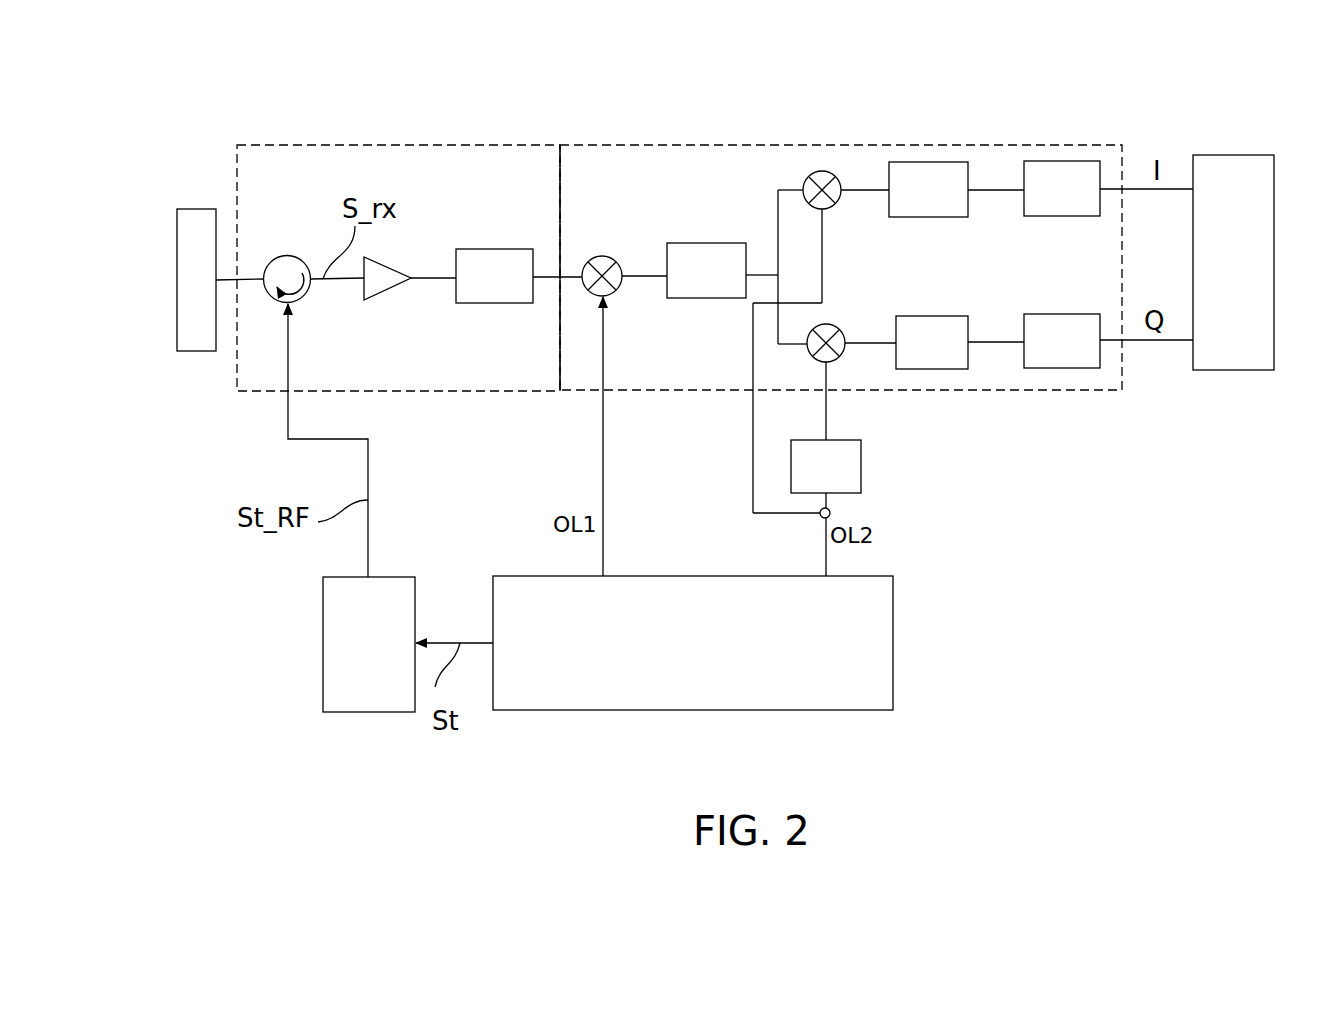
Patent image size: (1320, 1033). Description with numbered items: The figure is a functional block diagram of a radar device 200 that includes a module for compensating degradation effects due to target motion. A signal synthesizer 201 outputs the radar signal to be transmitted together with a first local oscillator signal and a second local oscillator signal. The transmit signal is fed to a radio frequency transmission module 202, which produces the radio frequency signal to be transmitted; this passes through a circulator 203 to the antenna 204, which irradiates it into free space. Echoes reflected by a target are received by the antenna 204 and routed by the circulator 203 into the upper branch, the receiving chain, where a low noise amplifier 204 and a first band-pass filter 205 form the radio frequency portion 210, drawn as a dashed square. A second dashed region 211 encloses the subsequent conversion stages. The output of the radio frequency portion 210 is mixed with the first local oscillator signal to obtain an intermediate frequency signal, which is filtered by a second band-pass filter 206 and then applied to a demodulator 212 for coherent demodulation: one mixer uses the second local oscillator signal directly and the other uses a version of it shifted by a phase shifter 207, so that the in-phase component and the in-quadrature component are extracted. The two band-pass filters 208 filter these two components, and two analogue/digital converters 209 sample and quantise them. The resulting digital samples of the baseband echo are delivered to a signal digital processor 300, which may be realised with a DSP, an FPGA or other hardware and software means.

The radar device 200 is at (1050, 50).
The signal synthesizer 201 is at (893, 640).
The radio frequency transmission module 202 is at (323, 652).
The circulator 203 is at (290, 256).
The antenna / amplifier 204 is at (203, 351).
The first band-pass filter 205 is at (470, 249).
The second band-pass filter 206 is at (688, 243).
The phase shifter 207 is at (861, 458).
The band-pass filters 208 is at (915, 162).
The analogue/digital converters 209 is at (1045, 161).
The radio frequency portion 210 is at (394, 145).
The demodulation section 211 is at (614, 145).
The demodulator 212 is at (810, 172).
The signal digital processor 300 is at (1225, 370).